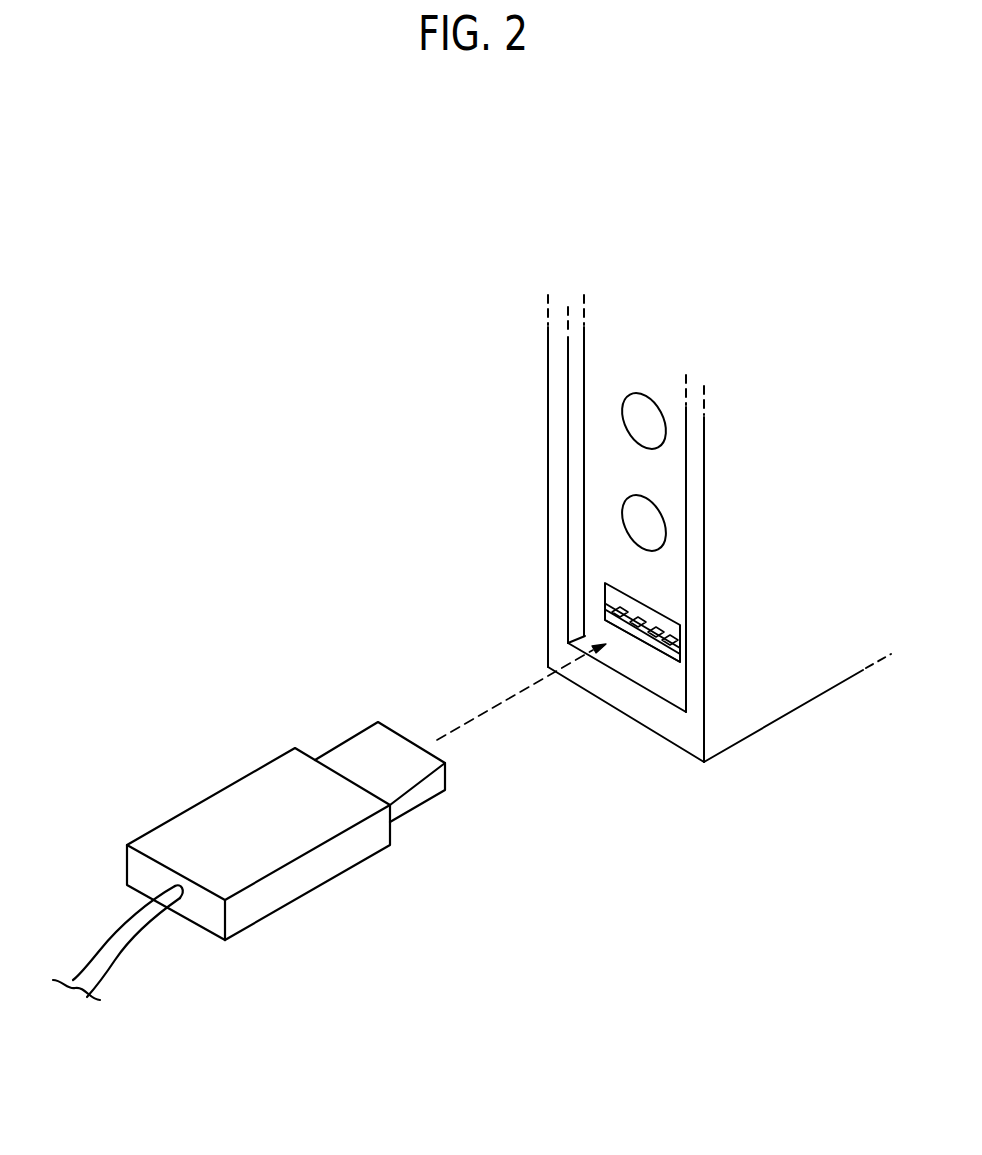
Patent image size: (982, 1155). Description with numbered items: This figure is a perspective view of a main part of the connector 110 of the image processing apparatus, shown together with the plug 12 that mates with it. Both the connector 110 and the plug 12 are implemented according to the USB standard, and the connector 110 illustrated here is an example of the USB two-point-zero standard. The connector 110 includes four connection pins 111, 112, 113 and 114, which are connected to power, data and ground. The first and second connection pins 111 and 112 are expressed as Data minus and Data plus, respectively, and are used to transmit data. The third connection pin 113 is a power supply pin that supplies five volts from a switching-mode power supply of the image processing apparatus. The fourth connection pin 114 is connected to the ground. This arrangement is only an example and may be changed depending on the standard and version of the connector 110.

The plug 12 is at (206, 763).
The connector 110 is at (588, 590).
The first connection pin 111 is at (627, 628).
The second connection pin 112 is at (646, 634).
The third connection pin 113 is at (603, 647).
The fourth connection pin 114 is at (672, 649).